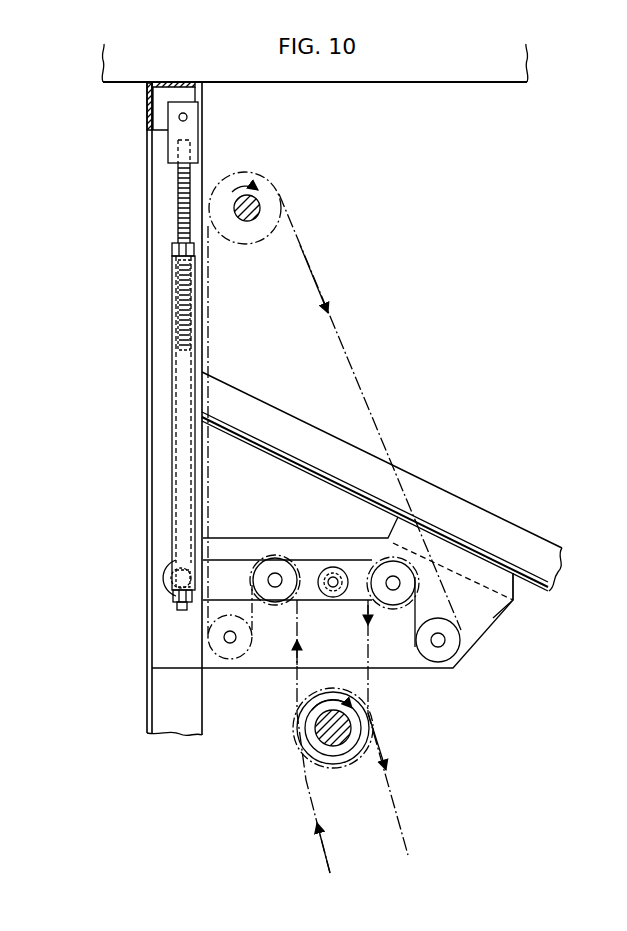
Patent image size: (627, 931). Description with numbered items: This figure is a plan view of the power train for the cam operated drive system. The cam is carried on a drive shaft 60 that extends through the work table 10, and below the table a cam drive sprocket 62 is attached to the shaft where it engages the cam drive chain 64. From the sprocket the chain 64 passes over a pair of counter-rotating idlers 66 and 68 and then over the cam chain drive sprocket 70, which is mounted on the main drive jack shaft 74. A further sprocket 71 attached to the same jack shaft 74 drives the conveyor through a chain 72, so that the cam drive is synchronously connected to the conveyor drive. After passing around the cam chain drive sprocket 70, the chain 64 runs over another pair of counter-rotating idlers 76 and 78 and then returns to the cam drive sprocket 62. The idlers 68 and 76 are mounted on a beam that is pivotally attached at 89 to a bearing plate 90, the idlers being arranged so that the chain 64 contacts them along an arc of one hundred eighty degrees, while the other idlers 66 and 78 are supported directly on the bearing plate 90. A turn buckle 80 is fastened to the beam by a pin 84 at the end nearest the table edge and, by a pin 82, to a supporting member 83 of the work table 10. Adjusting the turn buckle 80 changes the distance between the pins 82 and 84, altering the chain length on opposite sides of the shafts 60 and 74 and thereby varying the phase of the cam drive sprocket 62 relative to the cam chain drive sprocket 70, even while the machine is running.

The work table 10 is at (147, 700).
The drive shaft 60 is at (252, 206).
The cam drive sprocket 62 is at (243, 238).
The cam drive chain 64 is at (352, 360).
The counter-rotating idler 66 is at (458, 652).
The counter-rotating idler 68 is at (393, 597).
The cam chain drive sprocket 70 is at (320, 765).
The sprocket 71 is at (370, 755).
The chain 72 is at (397, 803).
The main drive jack shaft 74 is at (316, 735).
The counter-rotating idler 76 is at (272, 598).
The counter-rotating idler 78 is at (208, 637).
The turn buckle 80 is at (182, 380).
The pin 82 is at (187, 117).
The supporting member 83 is at (147, 113).
The pin 84 is at (170, 583).
The pivot 89 is at (331, 574).
The bearing plate 90 is at (493, 618).